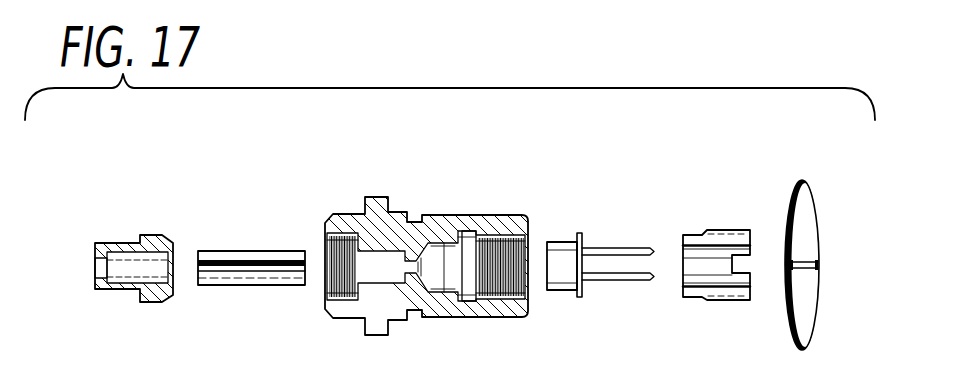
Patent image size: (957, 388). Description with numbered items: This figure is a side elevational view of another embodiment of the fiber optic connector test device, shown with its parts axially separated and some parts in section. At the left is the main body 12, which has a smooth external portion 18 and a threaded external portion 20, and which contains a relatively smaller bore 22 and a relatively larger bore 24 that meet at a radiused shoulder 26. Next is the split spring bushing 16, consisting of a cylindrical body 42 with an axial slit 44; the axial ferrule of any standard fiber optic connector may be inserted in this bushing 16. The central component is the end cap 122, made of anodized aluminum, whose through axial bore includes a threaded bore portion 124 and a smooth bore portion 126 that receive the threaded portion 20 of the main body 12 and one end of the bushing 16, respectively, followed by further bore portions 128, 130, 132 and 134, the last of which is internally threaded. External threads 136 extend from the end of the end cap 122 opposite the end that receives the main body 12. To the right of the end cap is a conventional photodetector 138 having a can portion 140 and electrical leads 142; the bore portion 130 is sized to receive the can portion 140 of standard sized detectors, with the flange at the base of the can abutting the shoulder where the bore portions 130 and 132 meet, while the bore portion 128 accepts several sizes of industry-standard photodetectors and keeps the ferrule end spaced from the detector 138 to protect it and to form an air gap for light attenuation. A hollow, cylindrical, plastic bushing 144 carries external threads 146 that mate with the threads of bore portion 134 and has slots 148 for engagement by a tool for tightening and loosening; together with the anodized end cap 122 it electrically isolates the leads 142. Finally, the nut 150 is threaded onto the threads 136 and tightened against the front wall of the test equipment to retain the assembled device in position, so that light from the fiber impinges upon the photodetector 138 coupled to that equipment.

The main body 12 is at (128, 226).
The bushing 16 is at (248, 238).
The smooth external portion 18 is at (113, 246).
The threaded external portion 20 is at (150, 303).
The smaller bore 22 is at (94, 273).
The larger bore 24 is at (168, 256).
The radiused shoulder 26 is at (122, 283).
The cylindrical body 42 is at (281, 280).
The axial slit 44 is at (247, 266).
The end cap 122 is at (490, 248).
The threaded bore portion 124 is at (320, 253).
The smooth bore portion 126 is at (383, 266).
The bore portion 128 is at (416, 265).
The bore portion 130 is at (443, 268).
The bore portion 132 is at (472, 251).
The internally threaded bore portion 134 is at (540, 247).
The external threads 136 is at (483, 318).
The photodetector 138 is at (614, 245).
The can portion 140 is at (563, 283).
The electrical leads 142 is at (628, 279).
The bushing 144 is at (718, 224).
The external threads 146 is at (722, 302).
The slots 148 is at (750, 260).
The nut 150 is at (805, 318).